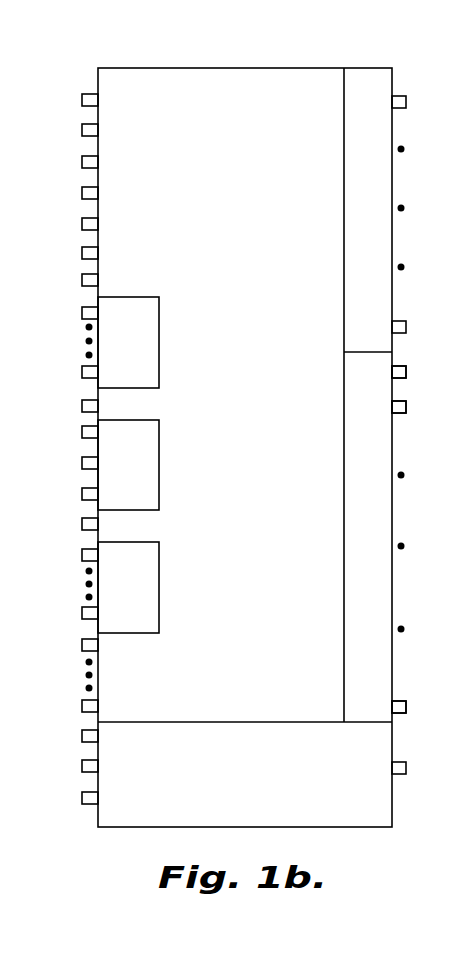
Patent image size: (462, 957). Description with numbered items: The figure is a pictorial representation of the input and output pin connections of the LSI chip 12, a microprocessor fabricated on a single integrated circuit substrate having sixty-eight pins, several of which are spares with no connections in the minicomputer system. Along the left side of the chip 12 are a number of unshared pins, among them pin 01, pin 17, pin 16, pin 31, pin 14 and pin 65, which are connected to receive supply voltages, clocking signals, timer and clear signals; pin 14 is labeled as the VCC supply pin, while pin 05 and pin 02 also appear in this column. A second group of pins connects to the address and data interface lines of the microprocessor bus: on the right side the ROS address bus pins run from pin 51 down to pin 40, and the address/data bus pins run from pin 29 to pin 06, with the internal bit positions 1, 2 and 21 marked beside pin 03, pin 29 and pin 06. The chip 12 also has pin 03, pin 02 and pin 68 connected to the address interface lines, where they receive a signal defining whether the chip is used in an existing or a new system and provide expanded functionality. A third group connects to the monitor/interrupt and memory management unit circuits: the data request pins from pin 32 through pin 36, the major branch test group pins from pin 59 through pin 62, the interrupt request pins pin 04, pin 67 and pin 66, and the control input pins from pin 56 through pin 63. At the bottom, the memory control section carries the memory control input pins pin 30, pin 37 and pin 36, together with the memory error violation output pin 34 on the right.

The LSI chip 12 is at (275, 68).
The unshared pin 01 is at (78, 100).
The unshared pin 17 is at (78, 130).
The unshared pin 16 is at (78, 162).
The unshared pin 31 is at (78, 193).
The pin 05 is at (78, 224).
The unshared pin 65 is at (78, 253).
The pin 02 is at (78, 280).
The data request pin / memory control input pin 36 is at (78, 524).
The data request pin 32 is at (78, 372).
The pin 68 is at (78, 406).
The interrupt request pin 66 is at (78, 432).
The interrupt request pin 67 is at (78, 463).
The interrupt request pin 04 is at (78, 494).
The unshared pin 14 is at (78, 524).
The major branch test group pin 59 is at (78, 555).
The major branch test group pin 62 is at (78, 613).
The control input pin 63 is at (78, 645).
The control input pin 56 is at (78, 706).
The memory control input pin 30 is at (78, 766).
The memory control input pin 37 is at (78, 798).
The ROS address bus pin 51 is at (411, 102).
The ROS address bus pin 40 is at (411, 327).
The pin 03 is at (411, 372).
The address/data bus pin 29 is at (411, 407).
The address/data bus pin 06 is at (411, 707).
The memory error violation output pin 34 is at (411, 768).
The unshared pin 1 is at (394, 372).
The pin 2 is at (393, 407).
The address/data bus pin 21 is at (389, 705).